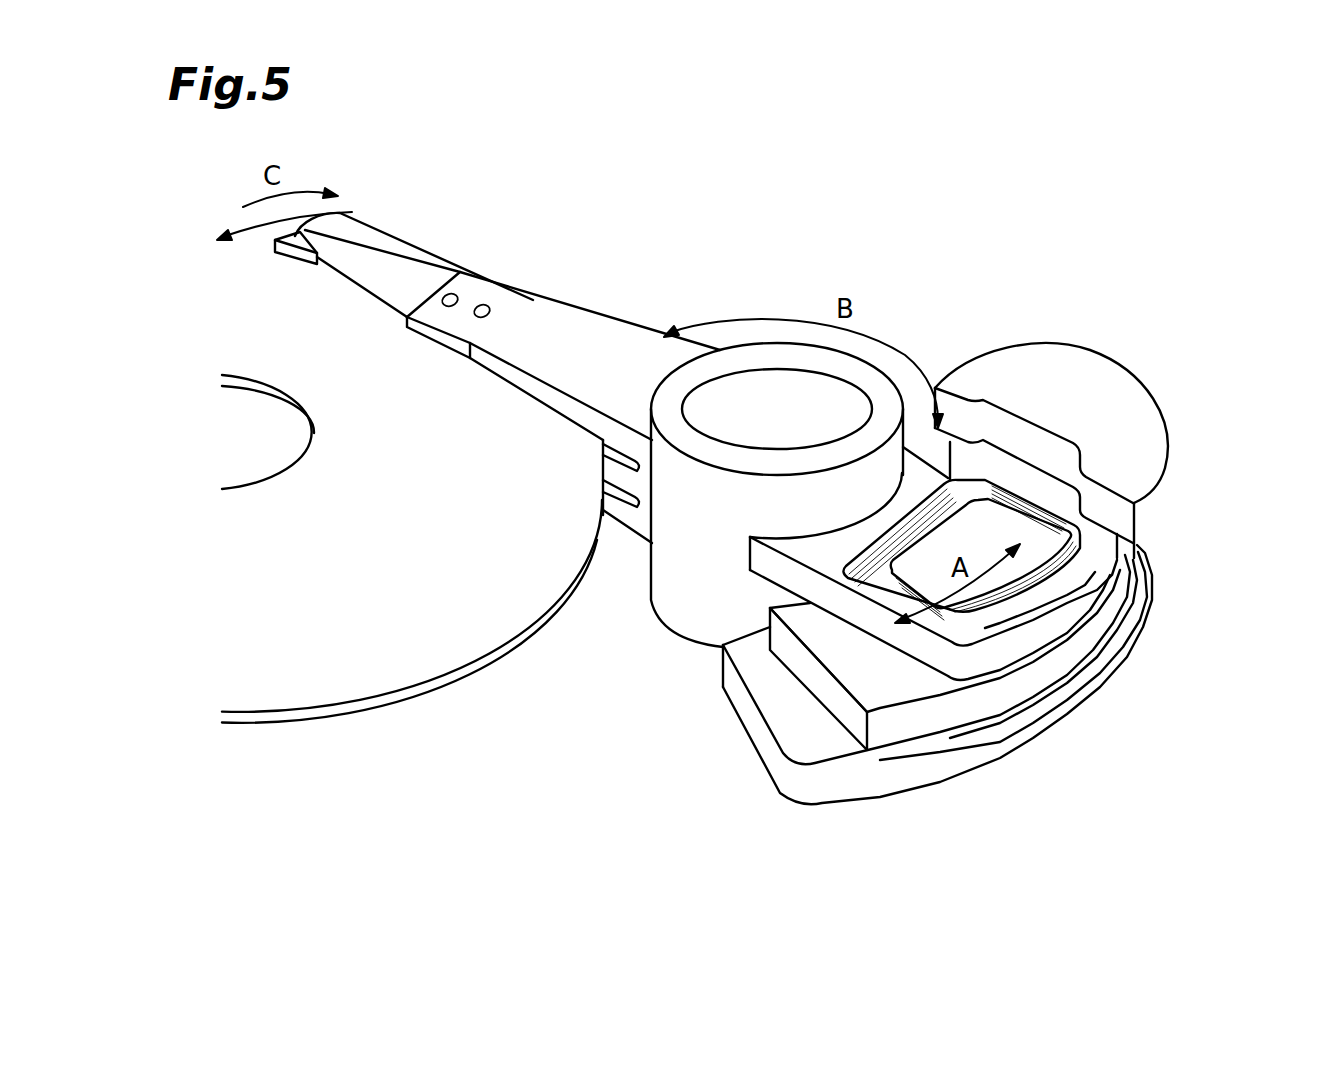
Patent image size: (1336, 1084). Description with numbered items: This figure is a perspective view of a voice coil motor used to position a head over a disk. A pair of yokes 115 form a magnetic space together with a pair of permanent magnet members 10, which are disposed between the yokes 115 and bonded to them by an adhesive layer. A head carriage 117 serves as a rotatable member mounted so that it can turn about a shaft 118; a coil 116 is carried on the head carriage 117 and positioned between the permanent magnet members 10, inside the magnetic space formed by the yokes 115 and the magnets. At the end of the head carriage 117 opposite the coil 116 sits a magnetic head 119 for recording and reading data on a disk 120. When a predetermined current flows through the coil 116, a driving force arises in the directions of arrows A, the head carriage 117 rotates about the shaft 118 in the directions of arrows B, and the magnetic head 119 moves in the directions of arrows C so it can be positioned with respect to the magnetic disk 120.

The permanent magnet member 10 is at (1128, 558).
The yoke 115 is at (1152, 497).
The coil 116 is at (1067, 588).
The head carriage 117 is at (593, 350).
The shaft 118 is at (763, 408).
The magnetic head 119 is at (295, 238).
The disk 120 is at (343, 638).